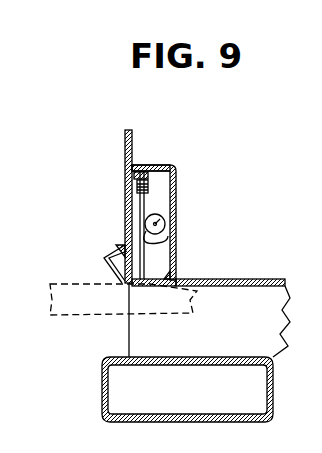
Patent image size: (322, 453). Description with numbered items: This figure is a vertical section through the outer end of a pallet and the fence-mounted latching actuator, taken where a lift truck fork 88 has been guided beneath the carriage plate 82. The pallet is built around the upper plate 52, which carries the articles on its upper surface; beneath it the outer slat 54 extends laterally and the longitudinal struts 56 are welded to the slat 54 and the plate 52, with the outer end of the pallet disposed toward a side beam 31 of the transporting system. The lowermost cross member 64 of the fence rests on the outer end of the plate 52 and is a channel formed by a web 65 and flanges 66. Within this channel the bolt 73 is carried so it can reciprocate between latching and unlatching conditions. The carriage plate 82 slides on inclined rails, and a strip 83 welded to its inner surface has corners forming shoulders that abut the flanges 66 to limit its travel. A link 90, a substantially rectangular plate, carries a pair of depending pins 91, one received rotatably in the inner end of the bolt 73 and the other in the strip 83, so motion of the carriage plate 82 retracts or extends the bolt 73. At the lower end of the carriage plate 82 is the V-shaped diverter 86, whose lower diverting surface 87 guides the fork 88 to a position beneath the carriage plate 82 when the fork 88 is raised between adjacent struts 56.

The carriage plate 82 is at (125, 145).
The cross member 64 is at (186, 179).
The flanges 66 is at (148, 165).
The upper plate 52 is at (243, 272).
The depending pins 91 is at (150, 183).
The strip 83 is at (136, 191).
The bolt 73 is at (139, 216).
The web 65 is at (166, 219).
The link 90 is at (170, 201).
The diverter 86 is at (104, 250).
The diverting surface 87 is at (108, 265).
The fork 88 is at (90, 299).
The struts 56 is at (170, 328).
The outer slat 54 is at (207, 357).
The side beam 31 is at (102, 392).